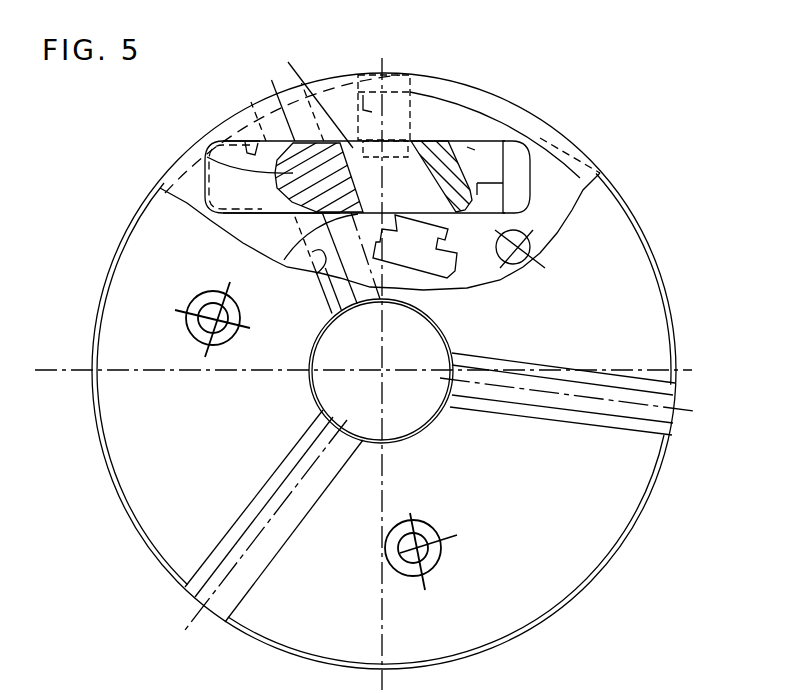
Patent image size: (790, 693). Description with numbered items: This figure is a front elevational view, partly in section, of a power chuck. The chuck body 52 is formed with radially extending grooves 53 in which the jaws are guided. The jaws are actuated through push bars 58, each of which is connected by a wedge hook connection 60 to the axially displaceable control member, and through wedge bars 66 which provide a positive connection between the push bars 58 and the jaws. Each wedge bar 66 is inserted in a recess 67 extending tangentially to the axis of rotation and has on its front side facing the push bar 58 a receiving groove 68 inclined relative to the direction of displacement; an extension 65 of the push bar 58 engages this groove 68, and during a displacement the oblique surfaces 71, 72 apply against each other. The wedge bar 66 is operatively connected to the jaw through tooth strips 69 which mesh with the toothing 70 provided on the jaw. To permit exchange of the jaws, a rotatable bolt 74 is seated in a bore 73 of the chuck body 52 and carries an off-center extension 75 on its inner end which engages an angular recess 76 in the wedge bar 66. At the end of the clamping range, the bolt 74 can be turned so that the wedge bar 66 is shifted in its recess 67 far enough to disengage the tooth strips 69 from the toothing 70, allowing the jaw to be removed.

The chuck body 52 is at (652, 247).
The radially extending grooves 53 is at (320, 270).
The push bars 58 is at (440, 133).
The wedge hook connection 60 is at (465, 272).
The extensions 65 is at (467, 147).
The wedge bars 66 is at (533, 150).
The recess 67 is at (247, 143).
The receiving groove 68 is at (523, 257).
The tooth strips 69 is at (207, 157).
The toothing 70 is at (235, 177).
The oblique surface 71 is at (507, 163).
The oblique surface 72 is at (603, 173).
The bore 73 is at (360, 133).
The bolt 74 is at (408, 77).
The off-center extension 75 is at (437, 113).
The angular recess 76 is at (288, 62).